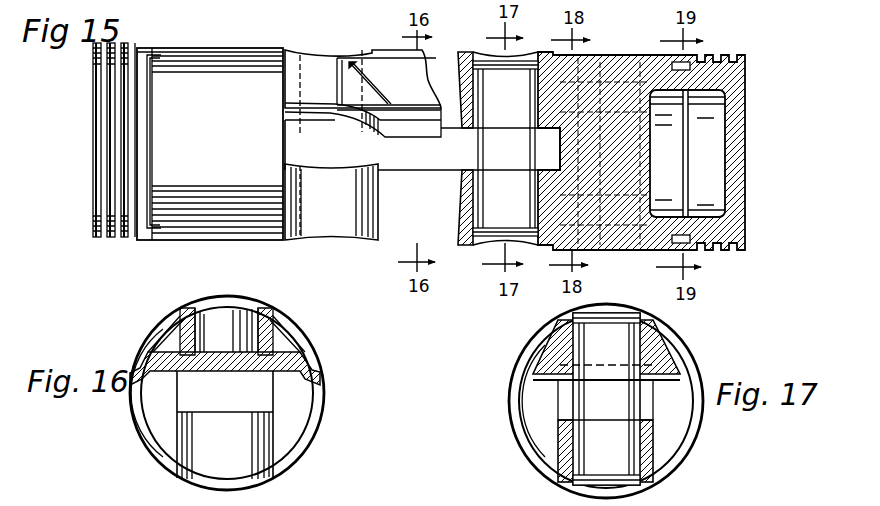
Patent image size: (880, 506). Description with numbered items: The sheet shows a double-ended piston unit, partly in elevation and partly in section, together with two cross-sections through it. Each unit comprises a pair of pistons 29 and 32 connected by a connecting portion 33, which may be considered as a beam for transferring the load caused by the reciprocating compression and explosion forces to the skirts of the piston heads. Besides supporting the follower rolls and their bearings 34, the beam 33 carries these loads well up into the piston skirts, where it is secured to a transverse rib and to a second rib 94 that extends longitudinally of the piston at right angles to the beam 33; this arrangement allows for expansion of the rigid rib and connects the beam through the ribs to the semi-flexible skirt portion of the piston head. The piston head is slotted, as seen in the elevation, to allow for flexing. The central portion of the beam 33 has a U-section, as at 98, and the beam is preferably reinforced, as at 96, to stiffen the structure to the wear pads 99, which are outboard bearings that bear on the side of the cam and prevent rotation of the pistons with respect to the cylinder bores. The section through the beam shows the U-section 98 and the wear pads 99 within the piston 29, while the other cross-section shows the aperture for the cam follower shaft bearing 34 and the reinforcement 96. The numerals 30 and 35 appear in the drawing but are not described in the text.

In FIG. 16, the piston 29 is at (313, 432).
In FIG. 17, the piston 29 is at (692, 432).
In FIG. 15, the shaft 30 is at (348, 156).
In FIG. 15, the piston 32 is at (222, 80).
In FIG. 15, the connecting portion 33 is at (357, 84).
In FIG. 15, the bearings 34 is at (473, 62).
In FIG. 16, the bearings 34 is at (250, 452).
In FIG. 17, the bearings 34 is at (580, 436).
In FIG. 15, the lower block 35 is at (374, 199).
In FIG. 15, the second rib 94 is at (648, 73).
In FIG. 17, the reinforcement 96 is at (666, 357).
In FIG. 15, the U-section 98 is at (412, 76).
In FIG. 16, the U-section 98 is at (268, 333).
In FIG. 15, the wear pads 99 is at (391, 138).
In FIG. 16, the wear pads 99 is at (306, 386).